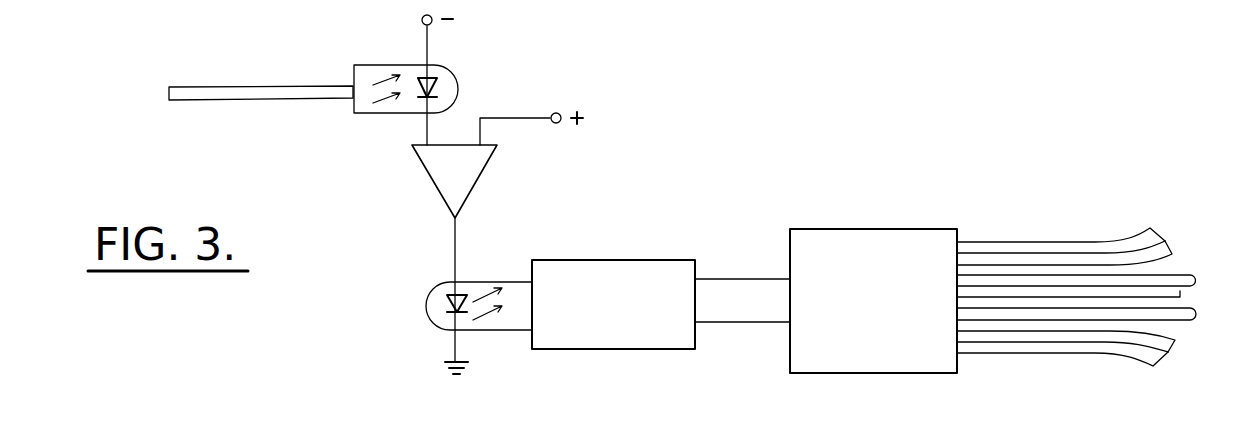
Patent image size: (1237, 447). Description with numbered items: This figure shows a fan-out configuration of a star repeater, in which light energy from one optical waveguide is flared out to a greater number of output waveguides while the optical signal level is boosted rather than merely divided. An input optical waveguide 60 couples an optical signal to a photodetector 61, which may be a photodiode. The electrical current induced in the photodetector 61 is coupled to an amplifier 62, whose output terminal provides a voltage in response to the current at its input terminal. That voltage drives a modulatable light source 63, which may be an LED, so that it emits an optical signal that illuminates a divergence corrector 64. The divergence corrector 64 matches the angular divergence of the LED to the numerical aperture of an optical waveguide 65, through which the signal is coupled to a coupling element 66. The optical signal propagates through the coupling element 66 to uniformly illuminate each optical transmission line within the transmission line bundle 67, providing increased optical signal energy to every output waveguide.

The optical waveguide 60 is at (247, 86).
The photodetector 61 is at (447, 84).
The amplifier 62 is at (478, 176).
The modulatable light source 63 is at (428, 311).
The divergence corrector 64 is at (618, 258).
The optical waveguide 65 is at (762, 277).
The coupling element 66 is at (860, 229).
The transmission line bundle 67 is at (1048, 355).